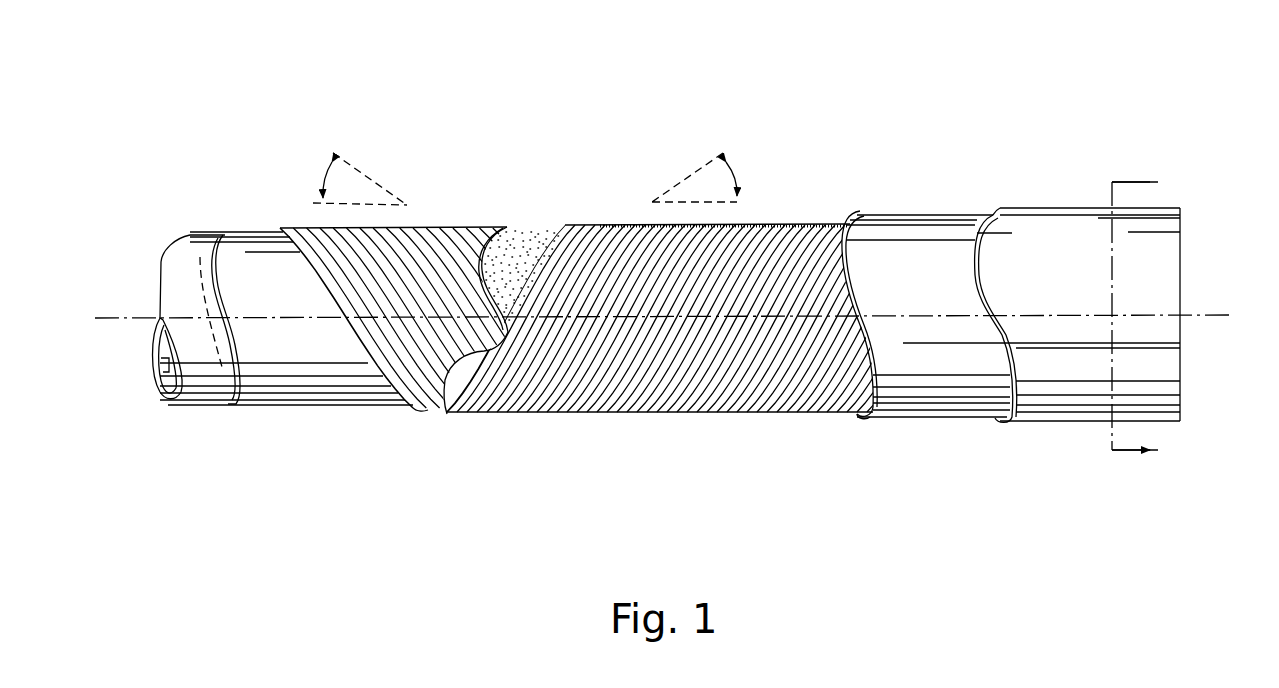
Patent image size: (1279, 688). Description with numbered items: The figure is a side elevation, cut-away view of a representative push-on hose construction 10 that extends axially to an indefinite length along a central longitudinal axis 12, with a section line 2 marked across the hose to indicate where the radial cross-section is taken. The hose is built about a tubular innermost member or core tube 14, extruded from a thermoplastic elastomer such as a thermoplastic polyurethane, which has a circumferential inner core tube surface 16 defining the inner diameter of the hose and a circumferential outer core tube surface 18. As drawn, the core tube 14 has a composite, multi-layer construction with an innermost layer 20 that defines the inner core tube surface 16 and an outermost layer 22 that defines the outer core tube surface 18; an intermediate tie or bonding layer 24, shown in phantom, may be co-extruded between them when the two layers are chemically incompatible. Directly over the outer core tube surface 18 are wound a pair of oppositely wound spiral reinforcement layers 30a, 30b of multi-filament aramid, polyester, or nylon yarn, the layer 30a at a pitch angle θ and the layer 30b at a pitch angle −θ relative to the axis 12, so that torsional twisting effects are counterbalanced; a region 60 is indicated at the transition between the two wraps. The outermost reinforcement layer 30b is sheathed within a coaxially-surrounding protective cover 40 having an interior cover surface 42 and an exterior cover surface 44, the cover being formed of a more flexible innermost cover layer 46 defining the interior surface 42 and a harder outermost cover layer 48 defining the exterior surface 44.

The hose construction 10 is at (1147, 95).
The central longitudinal axis 12 is at (1213, 315).
The core tube 14 is at (180, 441).
The inner core tube surface 16 is at (155, 363).
The outer core tube surface 18 is at (260, 233).
The innermost layer 20 is at (158, 273).
The outermost layer 22 is at (248, 233).
The intermediate tie layer 24 is at (223, 367).
The spiral wound reinforcement layer 30a is at (347, 387).
The spiral wound reinforcement layer 30b is at (443, 387).
The cover 40 is at (925, 482).
The interior cover surface 42 is at (840, 414).
The exterior cover surface 44 is at (1068, 210).
The innermost cover layer 46 is at (857, 220).
The outermost cover layer 48 is at (994, 212).
The adhesive region 60 is at (520, 224).
The section line 2- 2 is at (1135, 317).